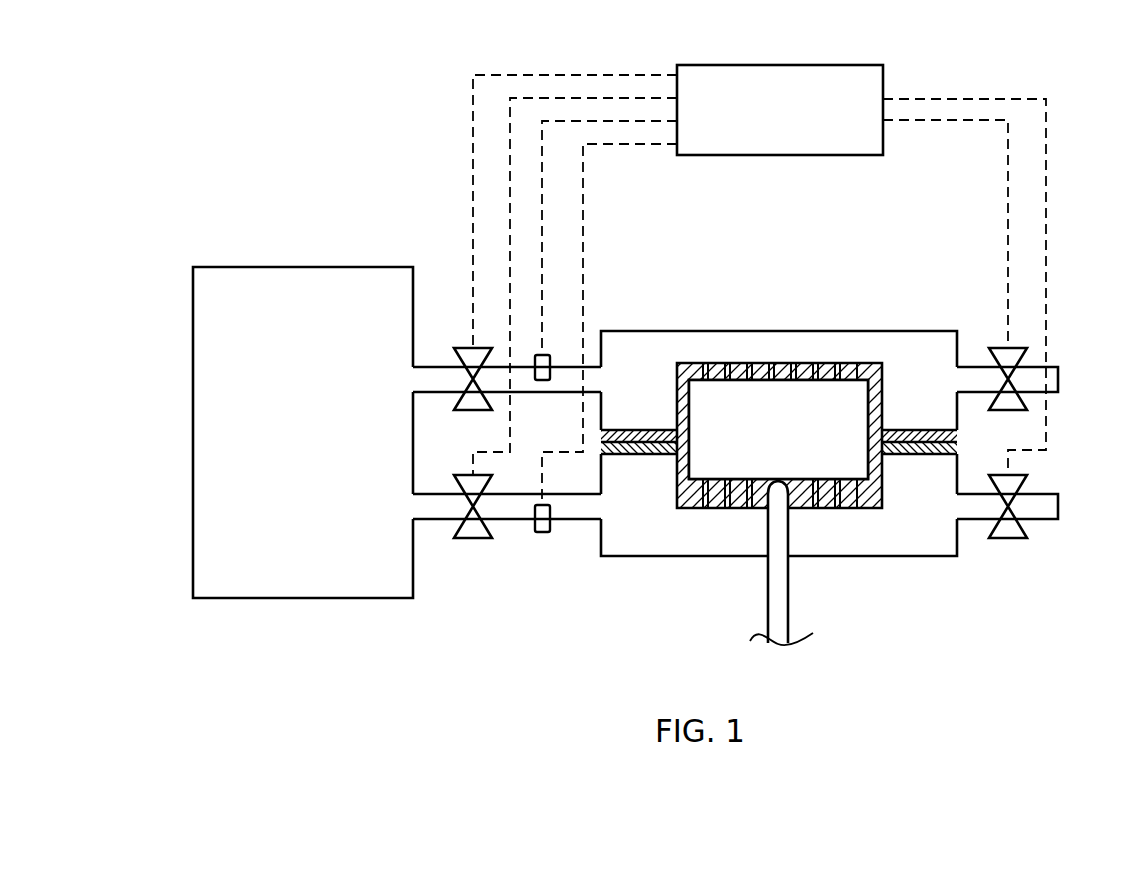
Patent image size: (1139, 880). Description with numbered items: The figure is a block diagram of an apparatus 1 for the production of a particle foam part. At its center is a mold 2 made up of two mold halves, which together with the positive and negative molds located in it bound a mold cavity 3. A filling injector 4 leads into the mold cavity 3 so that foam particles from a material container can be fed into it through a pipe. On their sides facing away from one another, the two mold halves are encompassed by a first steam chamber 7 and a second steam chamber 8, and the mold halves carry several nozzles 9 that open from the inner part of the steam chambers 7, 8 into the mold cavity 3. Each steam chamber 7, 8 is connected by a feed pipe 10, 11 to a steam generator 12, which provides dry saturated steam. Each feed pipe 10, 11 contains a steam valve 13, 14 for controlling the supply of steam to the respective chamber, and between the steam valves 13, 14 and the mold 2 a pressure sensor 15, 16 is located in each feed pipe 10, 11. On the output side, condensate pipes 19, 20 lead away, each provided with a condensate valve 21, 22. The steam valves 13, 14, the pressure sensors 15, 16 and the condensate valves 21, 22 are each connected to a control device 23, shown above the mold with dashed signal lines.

The apparatus 1 is at (1083, 73).
The mold 2 is at (797, 444).
The mold cavity 3 is at (715, 398).
The filling injector 4 is at (789, 597).
The first steam chamber 7 is at (641, 343).
The second steam chamber 8 is at (641, 548).
The nozzles 9 is at (756, 378).
The feed pipe 10 is at (432, 366).
The feed pipe 11 is at (432, 520).
The steam generator 12 is at (287, 448).
The steam valve 13 is at (480, 348).
The steam valve 14 is at (480, 538).
The pressure sensor 15 is at (550, 355).
The pressure sensor 16 is at (550, 532).
The condensate pipe 19 is at (1017, 348).
The condensate pipe 20 is at (967, 520).
The condensate valve 21 is at (966, 366).
The condensate valve 22 is at (1018, 538).
The control device 23 is at (762, 126).